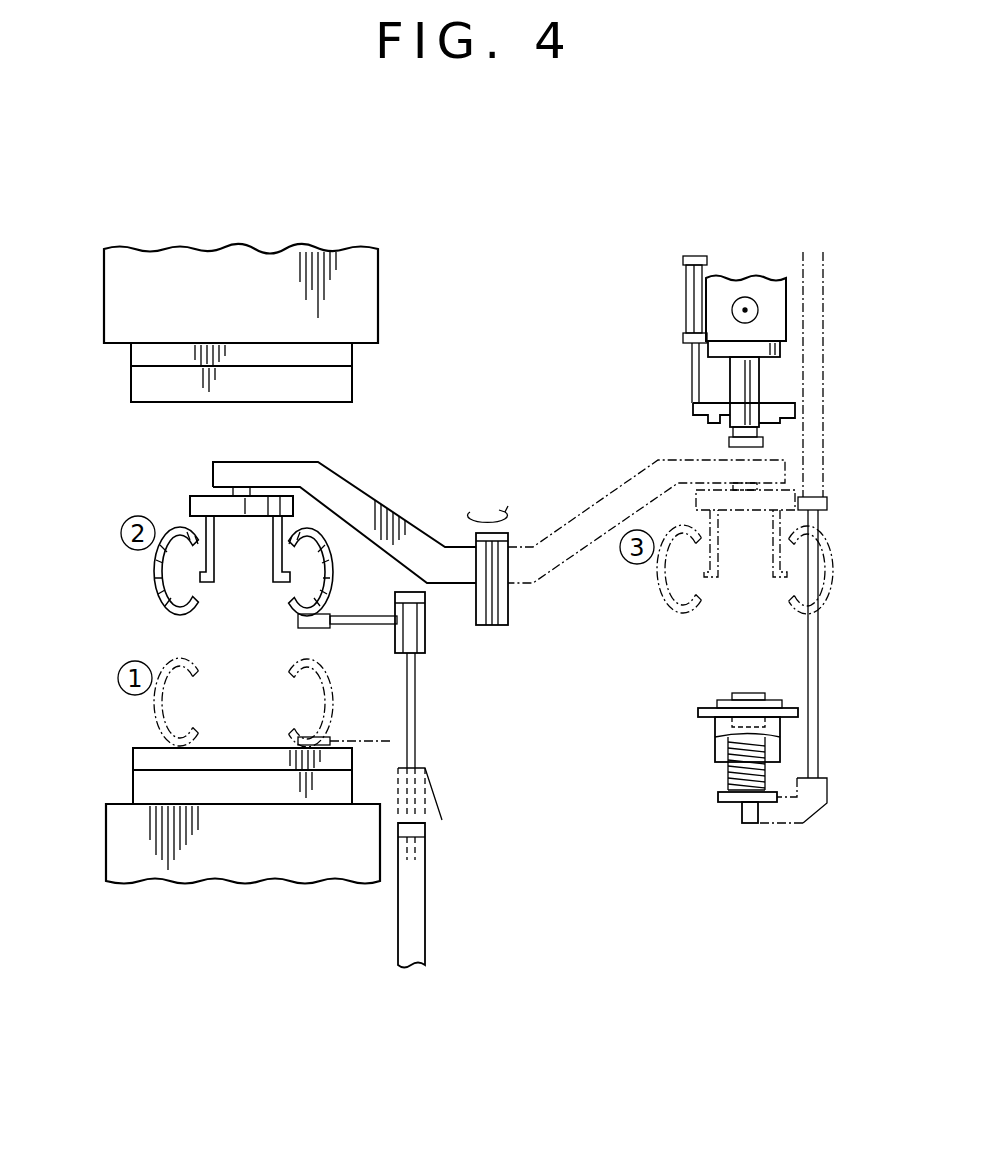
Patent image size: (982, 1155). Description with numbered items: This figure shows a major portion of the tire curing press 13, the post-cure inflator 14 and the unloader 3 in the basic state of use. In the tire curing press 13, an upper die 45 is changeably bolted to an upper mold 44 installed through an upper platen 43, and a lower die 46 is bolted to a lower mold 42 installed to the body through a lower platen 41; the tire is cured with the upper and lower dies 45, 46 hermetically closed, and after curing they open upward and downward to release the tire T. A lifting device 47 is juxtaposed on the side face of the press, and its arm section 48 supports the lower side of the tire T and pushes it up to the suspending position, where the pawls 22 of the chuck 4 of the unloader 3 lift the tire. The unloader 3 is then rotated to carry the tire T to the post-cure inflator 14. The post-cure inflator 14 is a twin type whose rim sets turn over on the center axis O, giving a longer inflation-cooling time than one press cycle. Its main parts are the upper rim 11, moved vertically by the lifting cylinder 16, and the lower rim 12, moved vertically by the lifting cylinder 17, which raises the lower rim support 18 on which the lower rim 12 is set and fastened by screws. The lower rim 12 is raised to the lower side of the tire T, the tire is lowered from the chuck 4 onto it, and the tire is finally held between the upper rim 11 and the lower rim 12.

The tire curing press 13 is at (236, 240).
The upper platen 43 is at (104, 290).
The upper mold 44 is at (131, 353).
The upper die 45 is at (131, 393).
The chuck 4 is at (198, 500).
The pawls 22 is at (210, 590).
The tire T is at (155, 583).
The unloader 3 is at (490, 508).
The arm section 48 is at (359, 640).
The lifting device 47 is at (417, 705).
The lower die 46 is at (133, 750).
The lower mold 42 is at (133, 787).
The lower platen 41 is at (106, 850).
The post-cure inflator 14 is at (743, 250).
The center axis O is at (745, 310).
The lifting cylinder 16 is at (683, 303).
The upper rim 11 is at (693, 410).
The lifting cylinder 17 is at (823, 413).
The lower rim 12 is at (698, 712).
The lower rim support 18 is at (715, 745).